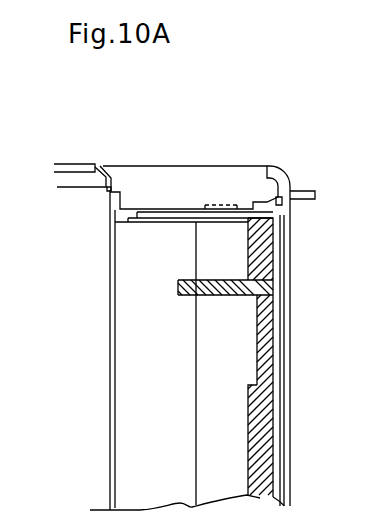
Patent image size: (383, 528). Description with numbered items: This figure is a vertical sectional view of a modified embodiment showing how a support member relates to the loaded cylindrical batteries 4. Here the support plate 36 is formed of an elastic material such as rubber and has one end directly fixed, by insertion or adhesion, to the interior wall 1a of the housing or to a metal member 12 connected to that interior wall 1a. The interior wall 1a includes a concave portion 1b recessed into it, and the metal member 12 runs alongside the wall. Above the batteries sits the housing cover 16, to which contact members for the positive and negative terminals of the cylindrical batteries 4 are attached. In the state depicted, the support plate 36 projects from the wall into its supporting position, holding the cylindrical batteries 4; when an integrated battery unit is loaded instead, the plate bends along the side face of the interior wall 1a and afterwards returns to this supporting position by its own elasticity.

The housing cover 16 is at (215, 177).
The cylindrical batteries 4 is at (210, 398).
The support plate 36 is at (228, 300).
The concave portion 1b is at (256, 348).
The interior wall 1a is at (260, 398).
The metal member 12 is at (275, 455).